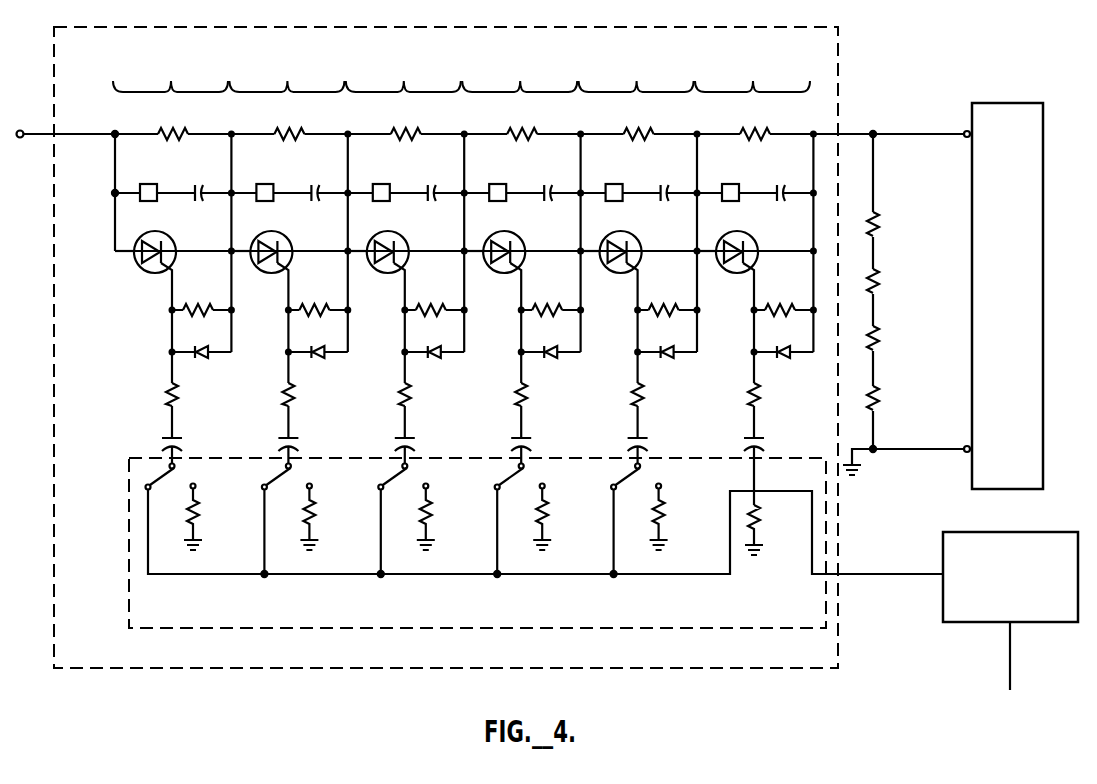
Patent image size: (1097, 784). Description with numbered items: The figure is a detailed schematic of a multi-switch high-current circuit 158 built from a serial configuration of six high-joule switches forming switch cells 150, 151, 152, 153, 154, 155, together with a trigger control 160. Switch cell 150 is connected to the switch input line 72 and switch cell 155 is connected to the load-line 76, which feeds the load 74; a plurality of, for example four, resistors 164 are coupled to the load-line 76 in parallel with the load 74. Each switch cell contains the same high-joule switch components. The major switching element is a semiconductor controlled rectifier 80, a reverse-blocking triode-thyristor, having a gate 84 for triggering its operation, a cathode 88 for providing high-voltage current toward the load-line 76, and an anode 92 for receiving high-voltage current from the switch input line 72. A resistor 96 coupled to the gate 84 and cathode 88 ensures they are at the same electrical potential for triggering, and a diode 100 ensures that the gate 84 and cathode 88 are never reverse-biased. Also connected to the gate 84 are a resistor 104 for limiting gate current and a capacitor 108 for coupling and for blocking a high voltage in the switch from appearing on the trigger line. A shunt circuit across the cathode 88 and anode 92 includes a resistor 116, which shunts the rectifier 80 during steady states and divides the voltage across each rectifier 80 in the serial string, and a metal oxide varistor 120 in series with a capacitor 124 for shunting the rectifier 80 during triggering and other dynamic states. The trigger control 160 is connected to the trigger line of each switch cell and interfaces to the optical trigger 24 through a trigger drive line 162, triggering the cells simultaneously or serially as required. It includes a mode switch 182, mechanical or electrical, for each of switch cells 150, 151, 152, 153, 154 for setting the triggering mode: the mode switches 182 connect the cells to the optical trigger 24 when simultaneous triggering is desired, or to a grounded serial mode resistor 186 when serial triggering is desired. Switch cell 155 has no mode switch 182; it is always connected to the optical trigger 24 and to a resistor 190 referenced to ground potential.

The multi-switch high-current circuit 158 is at (170, 27).
The trigger control 160 is at (129, 591).
The switch input line 72 is at (80, 133).
The load-line 76 is at (850, 133).
The load 74 is at (1044, 154).
The optical trigger 24 is at (1045, 532).
The trigger drive line 162 is at (861, 573).
The resistors 164 is at (879, 222).
The switch cell 150 is at (170, 73).
The switch cell 151 is at (286, 73).
The switch cell 152 is at (403, 73).
The switch cell 153 is at (519, 73).
The switch cell 154 is at (636, 73).
The switch cell 155 is at (752, 73).
The resistor 116 is at (188, 122).
The metal oxide varistor 120 is at (156, 178).
The capacitor 124 is at (211, 178).
The semiconductor controlled rectifier 80 is at (149, 268).
The anode 92 is at (129, 227).
The cathode 88 is at (203, 237).
The gate 84 is at (181, 276).
The resistor 96 is at (198, 299).
The diode 100 is at (216, 365).
The resistor 104 is at (154, 395).
The capacitor 108 is at (156, 436).
The mode switch 182 is at (161, 496).
The serial mode resistor 186 is at (208, 517).
The resistor 190 is at (771, 529).